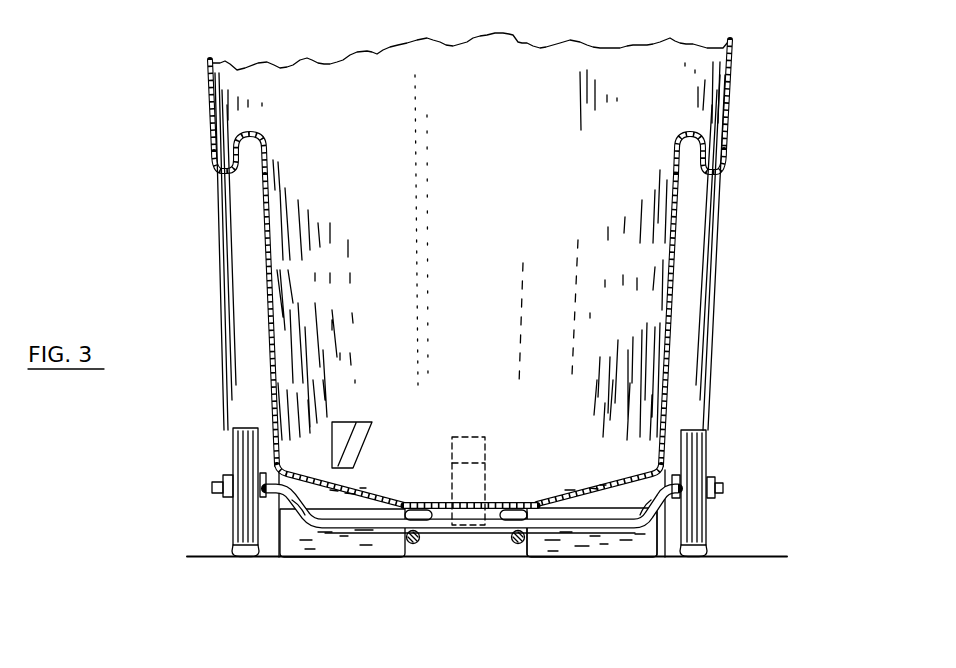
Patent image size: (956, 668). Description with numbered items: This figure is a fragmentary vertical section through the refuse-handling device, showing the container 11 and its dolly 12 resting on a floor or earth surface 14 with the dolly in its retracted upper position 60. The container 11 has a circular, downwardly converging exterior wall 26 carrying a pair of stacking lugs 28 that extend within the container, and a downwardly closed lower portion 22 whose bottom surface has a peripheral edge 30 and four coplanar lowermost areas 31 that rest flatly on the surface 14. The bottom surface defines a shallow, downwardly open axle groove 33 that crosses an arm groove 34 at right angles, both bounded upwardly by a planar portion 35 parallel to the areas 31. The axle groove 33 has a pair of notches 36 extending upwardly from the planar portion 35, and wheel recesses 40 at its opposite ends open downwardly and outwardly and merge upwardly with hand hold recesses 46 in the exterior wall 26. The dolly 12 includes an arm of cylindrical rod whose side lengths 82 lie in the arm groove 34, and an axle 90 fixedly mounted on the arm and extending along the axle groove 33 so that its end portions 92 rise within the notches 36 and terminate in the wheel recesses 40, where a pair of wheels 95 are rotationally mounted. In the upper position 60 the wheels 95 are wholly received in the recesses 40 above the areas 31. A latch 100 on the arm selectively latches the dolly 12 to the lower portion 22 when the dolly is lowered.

The container 11 is at (745, 98).
The dolly 12 is at (543, 546).
The floor or earth surface 14 is at (197, 556).
The lower portion 22 is at (714, 404).
The exterior wall 26 is at (212, 108).
The stacking lugs 28 is at (356, 422).
The peripheral edge 30 is at (230, 555).
The coplanar areas 31 is at (366, 560).
The axle groove 33 is at (638, 546).
The arm groove 34 is at (507, 549).
The planar portion 35 is at (498, 505).
The notches 36 is at (353, 499).
The wheel recesses 40 is at (270, 545).
The hand hold recess 46 is at (240, 176).
The upper position 60 is at (728, 472).
The side lengths 82 is at (512, 539).
The axle 90 is at (438, 517).
The end portions 92 is at (296, 503).
The wheels 95 is at (231, 441).
The latch 100 is at (470, 435).